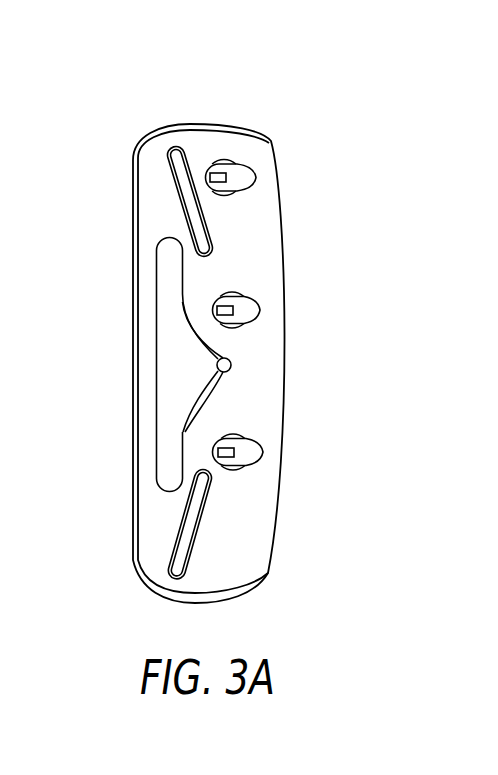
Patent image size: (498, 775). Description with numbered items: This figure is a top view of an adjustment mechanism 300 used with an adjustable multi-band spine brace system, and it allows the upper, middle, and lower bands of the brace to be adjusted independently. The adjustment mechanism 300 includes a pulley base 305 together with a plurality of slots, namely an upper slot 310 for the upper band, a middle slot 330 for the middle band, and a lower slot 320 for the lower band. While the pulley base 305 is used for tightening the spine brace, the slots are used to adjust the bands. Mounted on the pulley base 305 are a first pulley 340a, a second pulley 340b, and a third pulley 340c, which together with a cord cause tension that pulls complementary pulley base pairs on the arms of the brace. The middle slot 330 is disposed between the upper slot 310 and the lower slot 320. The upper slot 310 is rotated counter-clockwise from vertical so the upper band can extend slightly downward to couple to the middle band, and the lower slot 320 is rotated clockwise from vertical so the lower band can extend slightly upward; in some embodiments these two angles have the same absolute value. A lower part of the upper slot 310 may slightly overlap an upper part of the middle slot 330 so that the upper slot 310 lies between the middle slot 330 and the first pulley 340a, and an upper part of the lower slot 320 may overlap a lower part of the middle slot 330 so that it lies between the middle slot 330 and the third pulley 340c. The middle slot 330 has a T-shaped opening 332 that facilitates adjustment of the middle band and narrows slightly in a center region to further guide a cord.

The adjustment mechanism 300 is at (153, 100).
The pulley base 305 is at (253, 238).
The upper slot 310 is at (178, 203).
The lower slot 320 is at (175, 523).
The middle slot 330 is at (156, 402).
The T-shaped opening 332 is at (232, 360).
The first pulley 340a is at (250, 167).
The second pulley 340b is at (260, 308).
The third pulley 340c is at (264, 452).